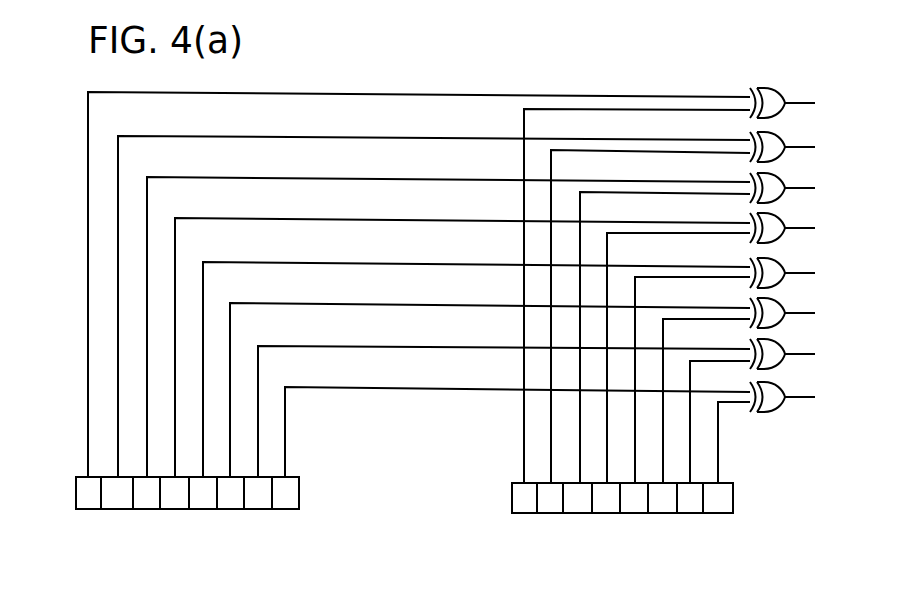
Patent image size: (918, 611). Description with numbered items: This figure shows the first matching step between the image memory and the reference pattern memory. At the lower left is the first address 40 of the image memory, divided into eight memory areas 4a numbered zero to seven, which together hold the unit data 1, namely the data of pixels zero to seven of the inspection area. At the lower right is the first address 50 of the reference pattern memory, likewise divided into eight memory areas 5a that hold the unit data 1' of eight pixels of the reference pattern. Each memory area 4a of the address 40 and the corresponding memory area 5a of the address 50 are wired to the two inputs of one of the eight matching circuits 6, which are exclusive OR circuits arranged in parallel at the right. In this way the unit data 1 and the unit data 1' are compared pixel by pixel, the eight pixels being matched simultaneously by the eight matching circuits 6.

The matching circuits 6 is at (727, 222).
The first address 40 is at (310, 493).
The first address 50 is at (752, 498).
The memory areas 4a is at (92, 509).
The memory areas 5a is at (552, 550).
The unit data 1 is at (261, 515).
The unit data 1' is at (676, 520).